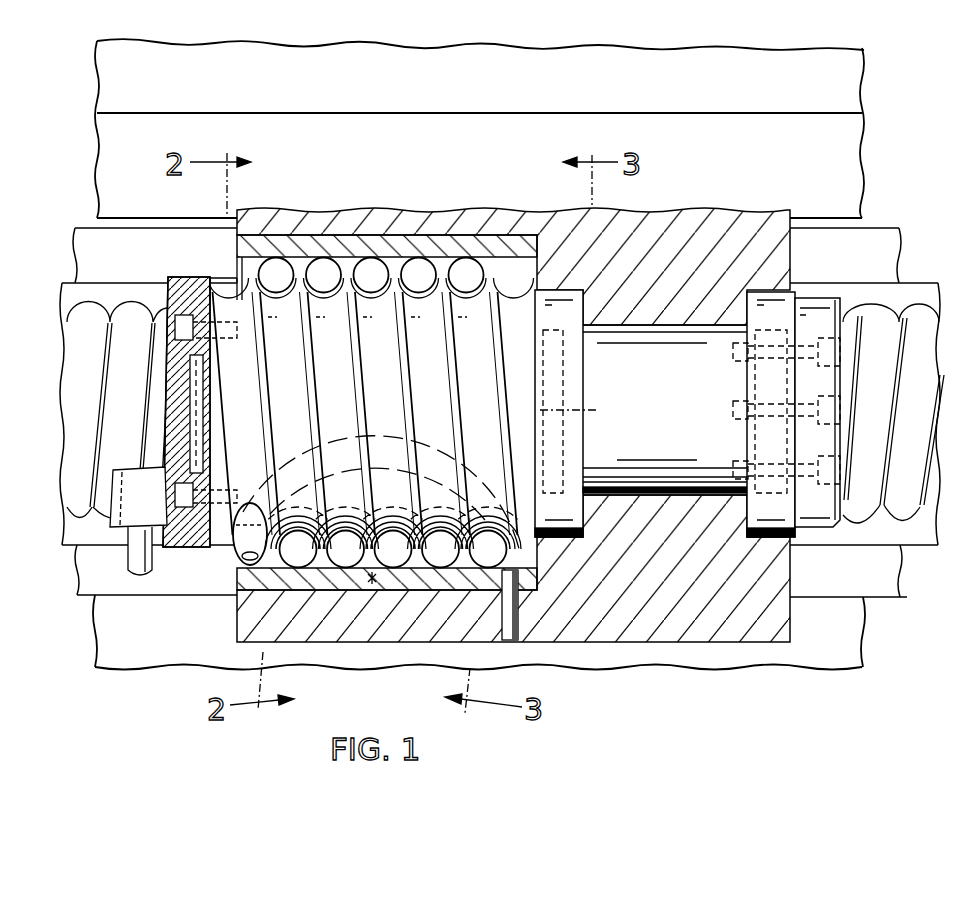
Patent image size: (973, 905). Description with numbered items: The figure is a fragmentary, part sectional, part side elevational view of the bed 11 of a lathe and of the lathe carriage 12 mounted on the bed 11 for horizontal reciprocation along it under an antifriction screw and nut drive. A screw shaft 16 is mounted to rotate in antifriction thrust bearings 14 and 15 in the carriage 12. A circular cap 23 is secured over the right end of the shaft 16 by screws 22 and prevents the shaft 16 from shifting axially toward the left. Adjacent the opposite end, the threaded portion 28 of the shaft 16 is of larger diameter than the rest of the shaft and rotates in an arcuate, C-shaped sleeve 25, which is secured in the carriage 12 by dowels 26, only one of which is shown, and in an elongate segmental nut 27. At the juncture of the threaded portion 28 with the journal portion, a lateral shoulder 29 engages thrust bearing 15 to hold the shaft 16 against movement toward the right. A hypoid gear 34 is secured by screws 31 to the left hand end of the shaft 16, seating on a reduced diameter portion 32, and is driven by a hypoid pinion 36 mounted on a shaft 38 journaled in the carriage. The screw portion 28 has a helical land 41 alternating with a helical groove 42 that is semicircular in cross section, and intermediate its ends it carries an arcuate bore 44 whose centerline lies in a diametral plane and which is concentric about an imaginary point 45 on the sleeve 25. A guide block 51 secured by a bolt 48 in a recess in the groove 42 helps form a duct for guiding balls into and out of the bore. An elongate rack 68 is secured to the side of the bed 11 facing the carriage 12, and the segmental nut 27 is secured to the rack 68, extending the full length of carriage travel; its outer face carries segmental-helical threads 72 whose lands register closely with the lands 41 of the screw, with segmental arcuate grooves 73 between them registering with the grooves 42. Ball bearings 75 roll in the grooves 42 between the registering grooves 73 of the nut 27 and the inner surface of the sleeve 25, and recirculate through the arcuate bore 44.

The machine bed 11 is at (99, 61).
The lathe carriage 12 is at (423, 210).
The antifriction thrust bearing 14 is at (775, 292).
The antifriction thrust bearing 15 is at (586, 296).
The screw shaft 16 is at (672, 423).
The screws 22 is at (733, 408).
The circular cap 23 is at (820, 300).
The C-shaped sleeve 25 is at (301, 230).
The dowels 26 is at (511, 637).
The segmental nut 27 is at (62, 292).
The threaded portion of the shaft 28 is at (437, 373).
The lateral shoulder 29 is at (538, 450).
The screws 31 is at (178, 328).
The reduced diameter portion 32 is at (196, 420).
The hypoid gear 34 is at (183, 278).
The hypoid pinion 36 is at (155, 511).
The pinion shaft 38 is at (130, 561).
The helical land 41 is at (243, 268).
The helical groove 42 is at (220, 283).
The arcuate bore 44 is at (379, 437).
The imaginary point 45 is at (370, 583).
The bolt 48 is at (240, 563).
The guide block 51 is at (255, 512).
The rack 68 is at (78, 236).
The segmental-helical threads 72 is at (145, 380).
The segmental arcuate grooves 73 is at (92, 416).
The ball bearings 75 is at (372, 258).